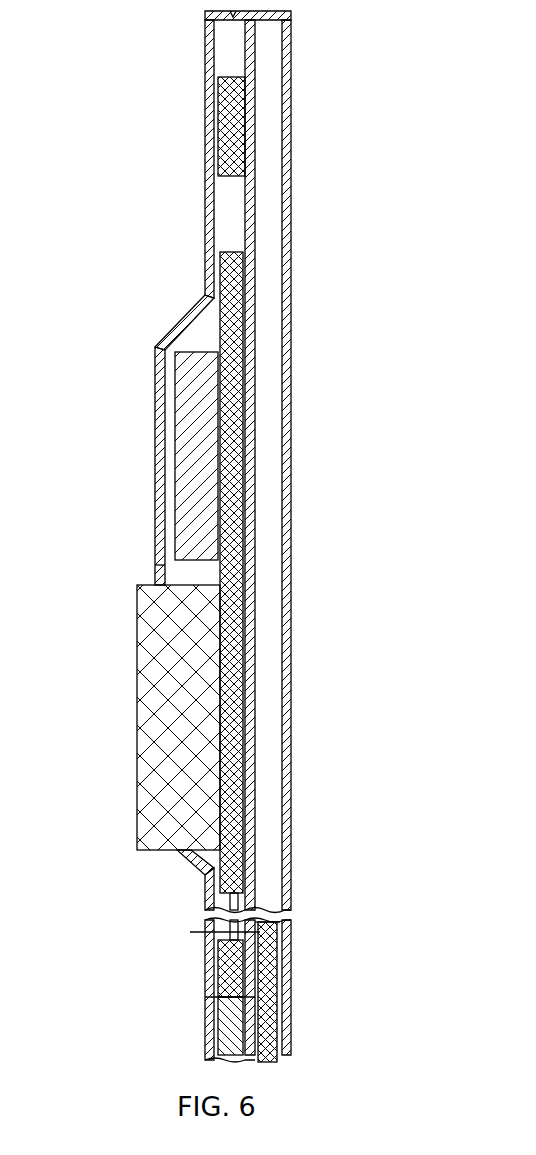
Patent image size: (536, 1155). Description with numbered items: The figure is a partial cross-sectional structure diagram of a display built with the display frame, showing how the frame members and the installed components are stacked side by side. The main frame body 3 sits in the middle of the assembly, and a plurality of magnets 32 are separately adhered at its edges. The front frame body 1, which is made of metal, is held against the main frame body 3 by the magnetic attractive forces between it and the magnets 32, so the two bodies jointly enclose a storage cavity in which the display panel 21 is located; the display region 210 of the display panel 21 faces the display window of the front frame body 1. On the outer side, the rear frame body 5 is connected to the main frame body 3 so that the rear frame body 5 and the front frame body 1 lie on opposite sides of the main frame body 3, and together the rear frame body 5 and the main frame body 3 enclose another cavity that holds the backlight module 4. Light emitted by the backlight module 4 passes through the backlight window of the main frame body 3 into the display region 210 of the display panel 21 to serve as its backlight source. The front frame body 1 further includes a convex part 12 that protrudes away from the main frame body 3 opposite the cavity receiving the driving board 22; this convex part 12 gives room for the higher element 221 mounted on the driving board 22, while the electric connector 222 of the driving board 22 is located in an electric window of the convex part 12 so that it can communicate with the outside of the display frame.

The front frame body 1 is at (208, 101).
The convex part 12 is at (181, 320).
The main frame body 3 is at (250, 82).
The rear frame body 5 is at (285, 223).
The magnets 32 is at (227, 156).
The driving board 22 is at (234, 344).
The higher element 221 is at (190, 438).
The electric connector 222 is at (170, 655).
The display panel 21 is at (226, 955).
The display region 210 is at (226, 1020).
The backlight module 4 is at (269, 990).